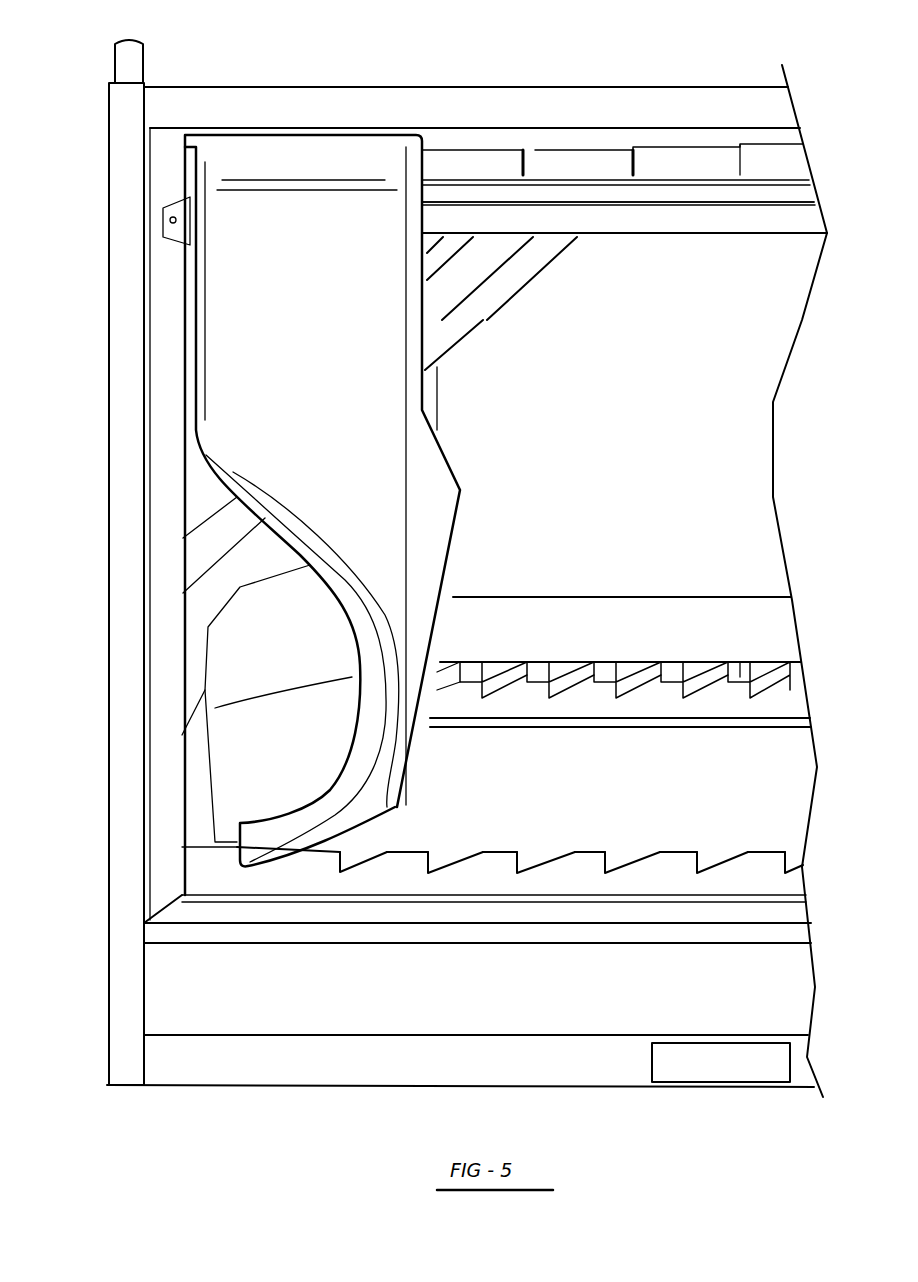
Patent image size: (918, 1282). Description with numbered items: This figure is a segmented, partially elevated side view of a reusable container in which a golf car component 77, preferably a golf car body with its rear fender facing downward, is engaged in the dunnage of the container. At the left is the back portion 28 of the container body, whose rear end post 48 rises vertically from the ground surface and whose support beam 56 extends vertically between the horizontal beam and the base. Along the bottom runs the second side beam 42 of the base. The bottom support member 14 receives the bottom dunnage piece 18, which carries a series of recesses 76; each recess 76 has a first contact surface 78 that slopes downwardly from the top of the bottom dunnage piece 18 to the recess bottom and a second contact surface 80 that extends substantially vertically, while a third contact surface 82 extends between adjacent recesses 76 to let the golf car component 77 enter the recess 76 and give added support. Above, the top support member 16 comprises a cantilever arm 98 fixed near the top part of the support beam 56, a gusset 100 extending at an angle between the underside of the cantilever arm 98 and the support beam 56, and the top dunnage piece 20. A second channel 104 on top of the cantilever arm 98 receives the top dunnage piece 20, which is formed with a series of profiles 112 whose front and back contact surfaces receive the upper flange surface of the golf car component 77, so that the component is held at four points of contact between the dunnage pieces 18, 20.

The bottom support member 14 is at (748, 734).
The top support member 16 is at (635, 245).
The bottom dunnage piece 18 is at (740, 677).
The top dunnage piece 20 is at (690, 160).
The back portion 28 is at (92, 823).
The second side beam 42 is at (287, 1086).
The rear end post 48 is at (107, 896).
The support beam 56 is at (166, 292).
The recess 76 is at (503, 667).
The golf car component 77 is at (275, 442).
The first contact surface 78 is at (567, 683).
The second contact surface 80 is at (702, 677).
The third contact surface 82 is at (610, 667).
The cantilever arm 98 is at (725, 223).
The gusset 100 is at (457, 253).
The second channel 104 is at (772, 195).
The profile 112 is at (523, 150).